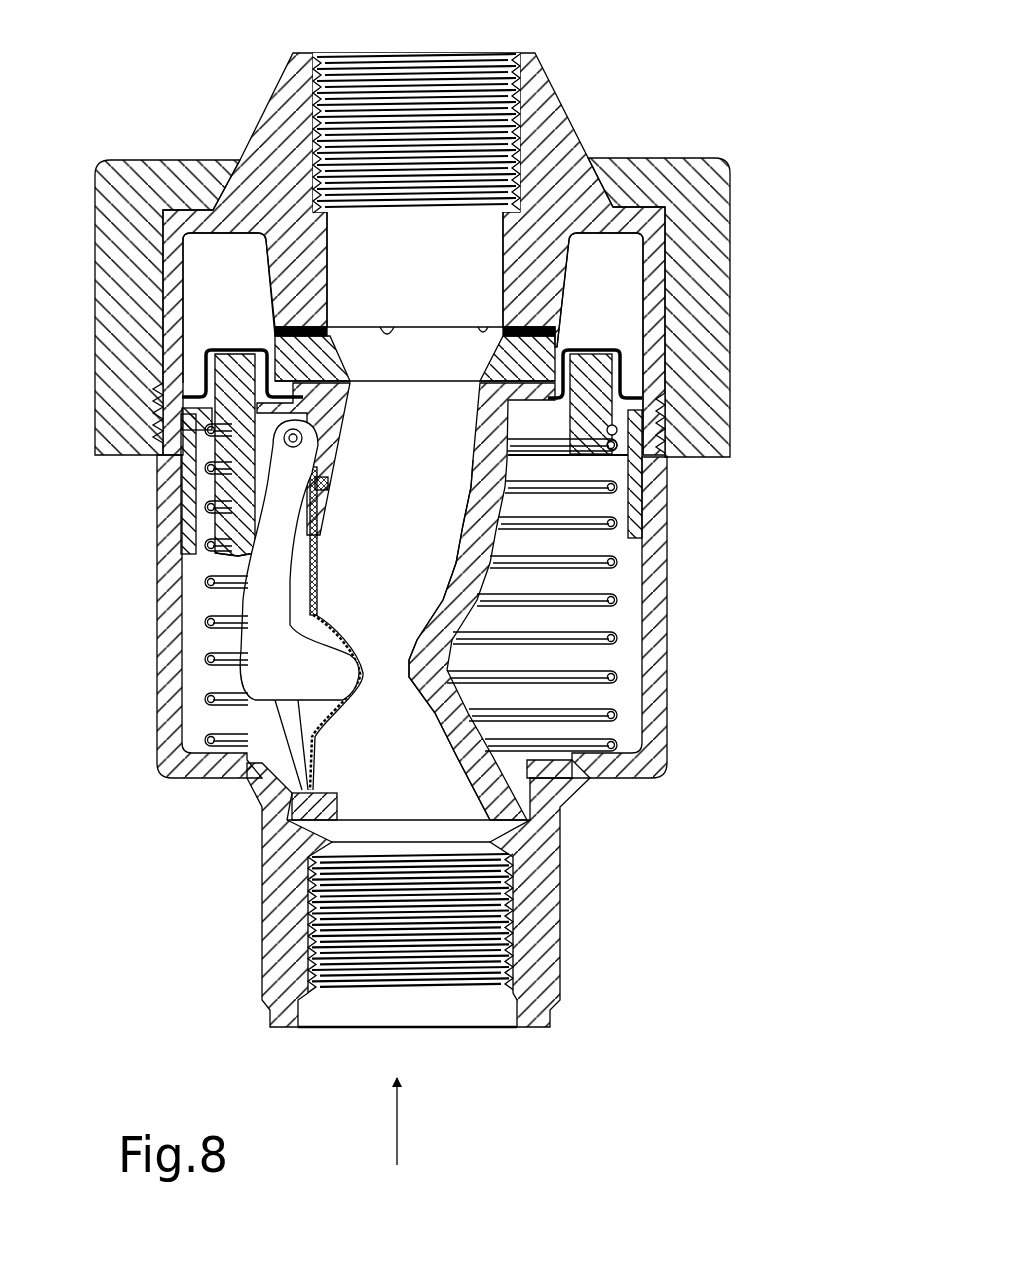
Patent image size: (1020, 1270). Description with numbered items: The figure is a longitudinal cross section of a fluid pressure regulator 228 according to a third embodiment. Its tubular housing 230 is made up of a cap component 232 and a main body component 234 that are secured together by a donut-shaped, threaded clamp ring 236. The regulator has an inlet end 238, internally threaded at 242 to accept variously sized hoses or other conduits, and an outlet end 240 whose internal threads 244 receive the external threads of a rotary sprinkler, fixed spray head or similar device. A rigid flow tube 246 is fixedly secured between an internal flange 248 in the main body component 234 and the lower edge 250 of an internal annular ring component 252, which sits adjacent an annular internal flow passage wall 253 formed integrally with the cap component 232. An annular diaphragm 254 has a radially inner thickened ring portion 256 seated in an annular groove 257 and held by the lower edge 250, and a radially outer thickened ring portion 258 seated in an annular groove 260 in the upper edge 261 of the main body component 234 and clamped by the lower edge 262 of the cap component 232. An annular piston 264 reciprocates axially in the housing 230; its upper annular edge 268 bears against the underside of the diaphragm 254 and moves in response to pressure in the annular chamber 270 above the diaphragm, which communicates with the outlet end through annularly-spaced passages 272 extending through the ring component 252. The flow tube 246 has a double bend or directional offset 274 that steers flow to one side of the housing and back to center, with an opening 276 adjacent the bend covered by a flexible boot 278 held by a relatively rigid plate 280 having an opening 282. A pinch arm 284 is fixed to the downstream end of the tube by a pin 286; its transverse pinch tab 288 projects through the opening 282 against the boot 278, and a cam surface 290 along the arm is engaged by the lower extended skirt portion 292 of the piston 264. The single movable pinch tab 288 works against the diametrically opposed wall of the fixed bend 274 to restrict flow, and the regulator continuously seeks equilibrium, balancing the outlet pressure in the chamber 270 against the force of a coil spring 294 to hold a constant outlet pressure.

The fluid pressure regulator 228 is at (814, 170).
The tubular housing 230 is at (690, 551).
The cap component 232 is at (655, 289).
The main body component 234 is at (668, 612).
The threaded clamp ring 236 is at (100, 224).
The inlet end 238 is at (555, 962).
The outlet end 240 is at (537, 100).
The internal threads of inlet end 242 is at (390, 965).
The internal threads of outlet end 244 is at (384, 82).
The rigid flow tube 246 is at (477, 516).
The internal flange 248 is at (548, 778).
The lower edge of internal annular ring component 250 is at (300, 397).
The internal annular ring component 252 is at (505, 360).
The annular internal flow passage wall 253 is at (310, 290).
The annular diaphragm 254 is at (583, 347).
The inner thickened ring portion 256 is at (506, 323).
The annular groove 257 is at (347, 410).
The outer thickened ring portion 258 is at (668, 395).
The annular groove 260 is at (172, 378).
The upper edge of main body component 261 is at (663, 347).
The lower edge of cap component 262 is at (160, 432).
The annular piston 264 is at (558, 418).
The upper annular edge of piston 268 is at (227, 347).
The annular chamber 270 is at (328, 243).
The annularly-spaced passages 272 is at (300, 345).
The double bend or directional offset 274 is at (398, 658).
The opening in rigid tube 276 is at (330, 520).
The flexible boot 278 is at (343, 705).
The rigid plate 280 is at (315, 545).
The opening in plate 282 is at (355, 650).
The pinch arm 284 is at (250, 636).
The pin 286 is at (181, 507).
The pinch tab 288 is at (337, 750).
The cam surface 290 is at (255, 508).
The lower extended skirt portion 292 is at (250, 556).
The coil spring 294 is at (618, 717).